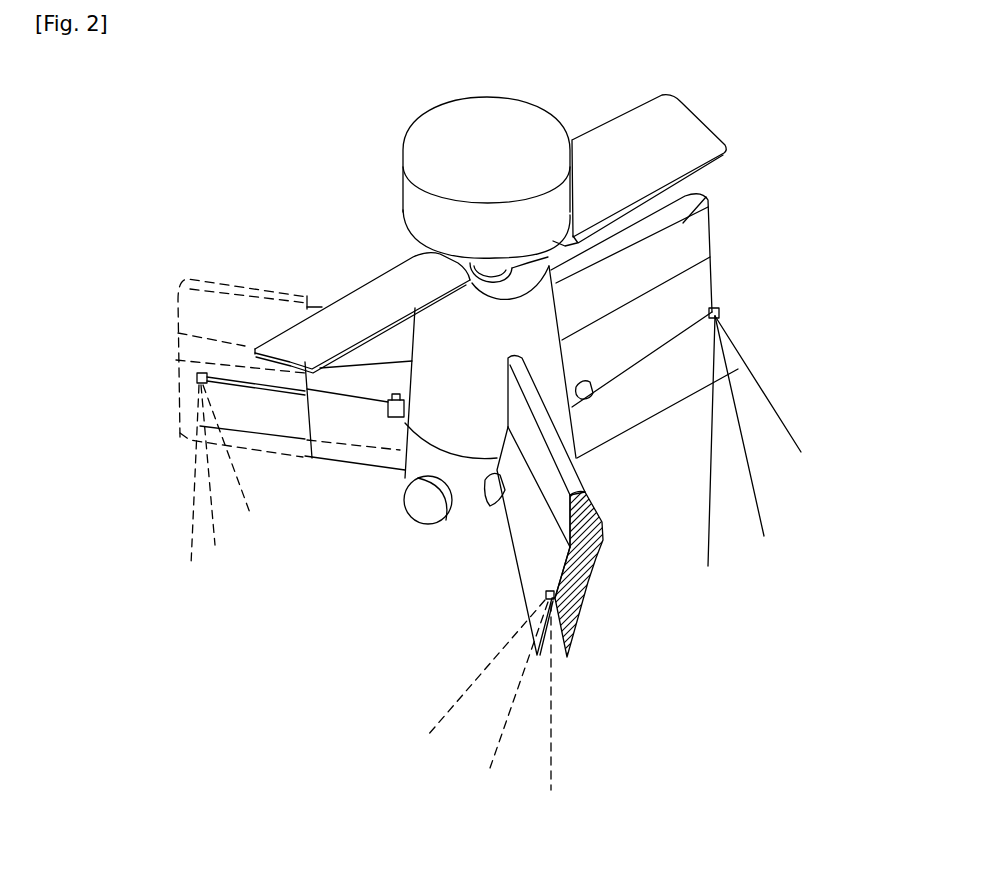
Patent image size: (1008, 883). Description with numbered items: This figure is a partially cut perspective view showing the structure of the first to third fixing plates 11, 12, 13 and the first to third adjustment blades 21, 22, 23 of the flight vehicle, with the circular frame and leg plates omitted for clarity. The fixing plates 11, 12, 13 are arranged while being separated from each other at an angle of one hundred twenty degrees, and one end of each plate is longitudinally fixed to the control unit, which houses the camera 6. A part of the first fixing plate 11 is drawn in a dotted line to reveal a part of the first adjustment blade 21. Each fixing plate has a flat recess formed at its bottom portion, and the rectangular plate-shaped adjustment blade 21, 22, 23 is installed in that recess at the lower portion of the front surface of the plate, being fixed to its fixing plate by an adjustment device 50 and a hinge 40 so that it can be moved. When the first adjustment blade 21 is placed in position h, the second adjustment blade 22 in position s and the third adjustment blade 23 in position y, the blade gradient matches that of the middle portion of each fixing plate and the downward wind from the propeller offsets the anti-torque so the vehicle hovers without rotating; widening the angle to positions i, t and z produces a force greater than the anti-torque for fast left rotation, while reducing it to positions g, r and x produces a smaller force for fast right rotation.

The camera 6 is at (423, 496).
The first fixing plate 11 is at (212, 308).
The second fixing plate 12 is at (597, 562).
The third fixing plate 13 is at (706, 196).
The first adjustment blade 21 is at (223, 393).
The second adjustment blade 22 is at (495, 548).
The third adjustment blade 23 is at (684, 348).
The hinge 40 is at (200, 376).
The adjustment device 50 is at (392, 395).